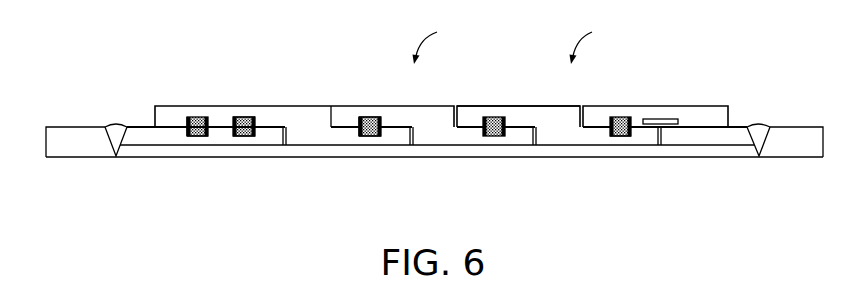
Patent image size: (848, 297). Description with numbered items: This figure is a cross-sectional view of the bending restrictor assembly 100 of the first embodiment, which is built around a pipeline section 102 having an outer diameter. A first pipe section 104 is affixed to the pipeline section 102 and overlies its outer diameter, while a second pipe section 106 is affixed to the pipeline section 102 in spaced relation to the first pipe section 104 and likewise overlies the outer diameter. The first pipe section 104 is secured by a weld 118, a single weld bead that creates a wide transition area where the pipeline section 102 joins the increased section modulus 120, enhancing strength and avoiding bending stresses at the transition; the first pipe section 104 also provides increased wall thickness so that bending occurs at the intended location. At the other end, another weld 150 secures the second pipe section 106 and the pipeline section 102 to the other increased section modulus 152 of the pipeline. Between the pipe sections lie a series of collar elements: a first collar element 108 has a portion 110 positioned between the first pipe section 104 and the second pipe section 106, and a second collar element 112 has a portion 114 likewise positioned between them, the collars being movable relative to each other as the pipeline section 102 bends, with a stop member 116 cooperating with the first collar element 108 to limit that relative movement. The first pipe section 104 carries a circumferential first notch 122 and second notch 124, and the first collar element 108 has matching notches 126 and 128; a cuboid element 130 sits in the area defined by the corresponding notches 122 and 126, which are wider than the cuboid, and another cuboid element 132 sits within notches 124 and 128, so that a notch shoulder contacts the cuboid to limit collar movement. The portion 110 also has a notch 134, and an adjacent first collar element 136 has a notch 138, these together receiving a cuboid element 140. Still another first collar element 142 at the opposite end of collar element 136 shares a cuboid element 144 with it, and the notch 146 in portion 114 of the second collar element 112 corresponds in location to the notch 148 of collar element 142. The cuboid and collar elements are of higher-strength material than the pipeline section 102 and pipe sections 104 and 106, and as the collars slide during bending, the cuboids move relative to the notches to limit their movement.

The bending restrictor assembly 100 is at (519, 43).
The pipeline section 102 is at (197, 151).
The first pipe section 104 is at (142, 132).
The second pipe section 106 is at (735, 137).
The first collar element 108 is at (307, 118).
The portion of first collar element 110 is at (333, 138).
The second collar element 112 is at (665, 118).
The portion of second collar element 114 is at (594, 118).
The stop member 116 is at (378, 121).
The weld 118 is at (110, 132).
The increased section modulus 120 is at (63, 135).
The first notch 122 is at (191, 136).
The second notch 124 is at (249, 136).
The notch of first collar element 126 is at (203, 122).
The notch of first collar element 128 is at (249, 122).
The cuboid element 130 is at (192, 121).
The cuboid element 132 is at (243, 117).
The notch 134 is at (371, 136).
The first collar element 136 is at (432, 118).
The notch 138 is at (369, 117).
The cuboid element 140 is at (359, 127).
The first collar element 142 is at (545, 118).
The cuboid element 144 is at (496, 117).
The notch 146 is at (621, 121).
The notch 148 is at (622, 136).
The weld 150 is at (765, 127).
The increased section modulus 152 is at (793, 150).